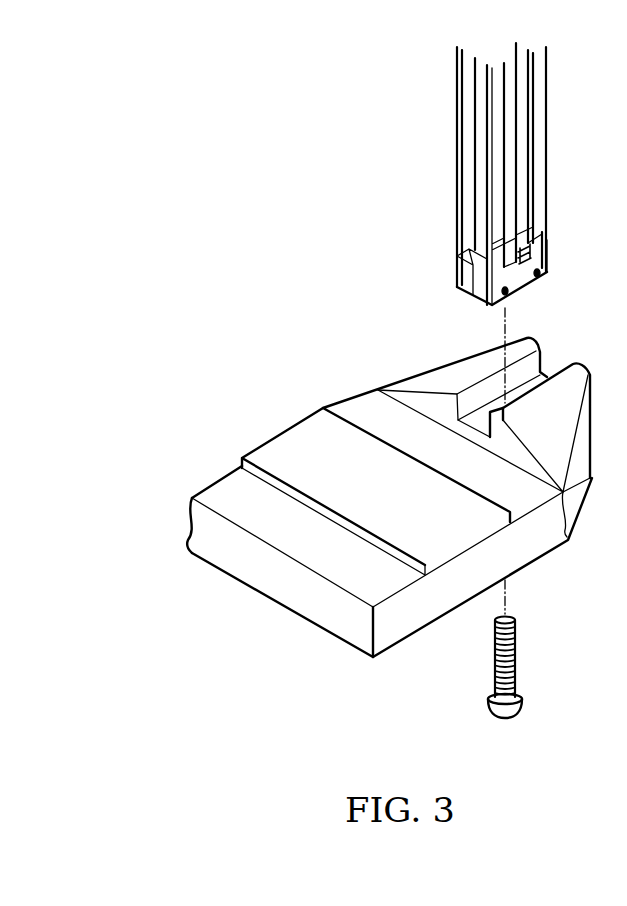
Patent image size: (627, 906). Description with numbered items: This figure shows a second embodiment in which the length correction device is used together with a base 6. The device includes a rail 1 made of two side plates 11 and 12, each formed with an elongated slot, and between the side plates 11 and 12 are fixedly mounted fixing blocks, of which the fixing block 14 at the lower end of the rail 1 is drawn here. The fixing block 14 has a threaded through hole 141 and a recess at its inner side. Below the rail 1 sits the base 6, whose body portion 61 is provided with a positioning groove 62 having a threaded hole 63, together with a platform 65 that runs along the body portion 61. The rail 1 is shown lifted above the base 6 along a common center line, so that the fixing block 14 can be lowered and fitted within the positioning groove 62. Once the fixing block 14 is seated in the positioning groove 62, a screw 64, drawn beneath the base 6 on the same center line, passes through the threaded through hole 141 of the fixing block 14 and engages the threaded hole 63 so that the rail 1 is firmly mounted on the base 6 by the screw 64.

The rail 1 is at (486, 177).
The side plate 11 is at (463, 97).
The side plate 12 is at (497, 201).
The fixing block 14 is at (493, 274).
The threaded through hole 141 is at (525, 262).
The base 6 is at (401, 496).
The body portion 61 is at (444, 607).
The positioning groove 62 is at (469, 409).
The threaded hole 63 is at (495, 405).
The screw 64 is at (517, 651).
The platform 65 is at (323, 432).